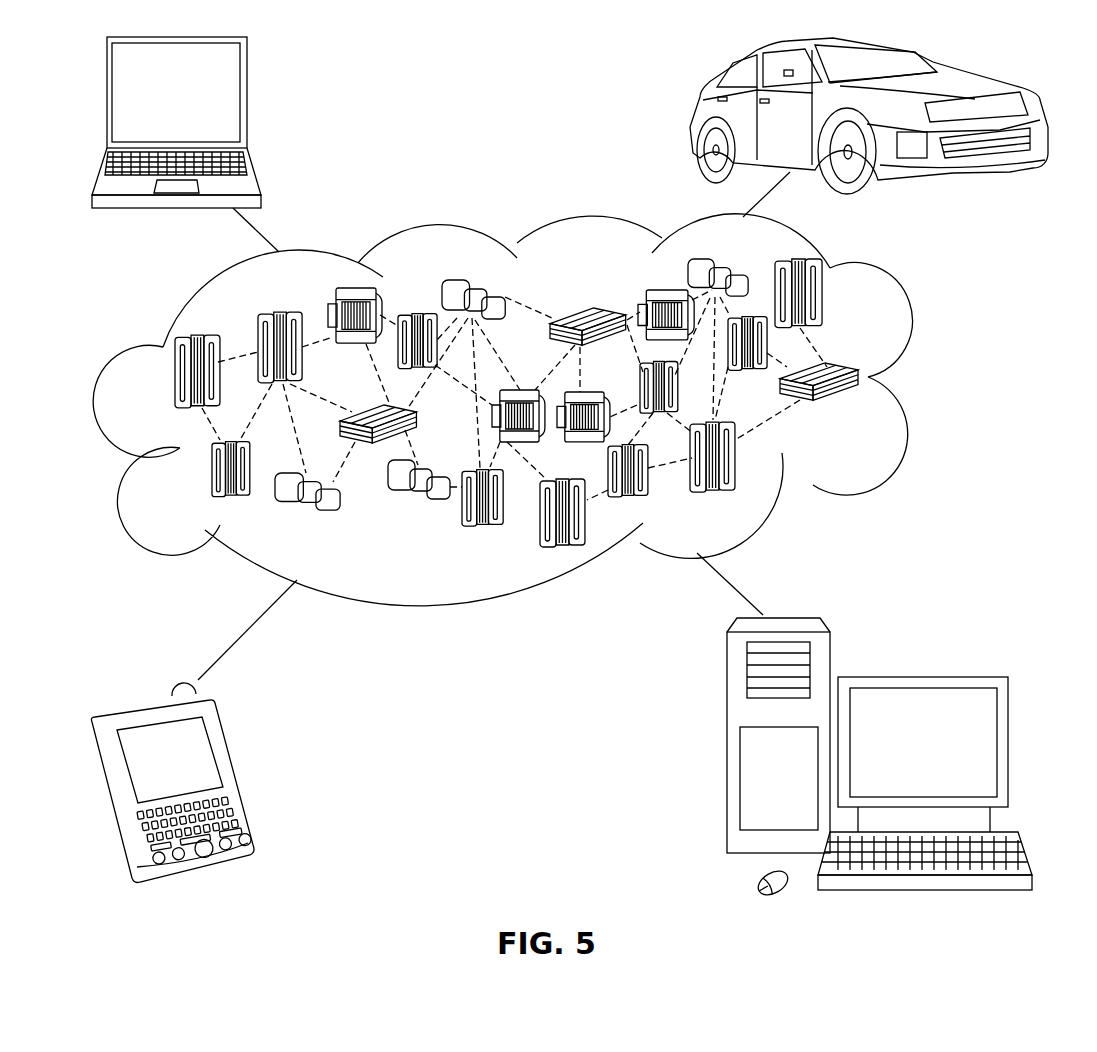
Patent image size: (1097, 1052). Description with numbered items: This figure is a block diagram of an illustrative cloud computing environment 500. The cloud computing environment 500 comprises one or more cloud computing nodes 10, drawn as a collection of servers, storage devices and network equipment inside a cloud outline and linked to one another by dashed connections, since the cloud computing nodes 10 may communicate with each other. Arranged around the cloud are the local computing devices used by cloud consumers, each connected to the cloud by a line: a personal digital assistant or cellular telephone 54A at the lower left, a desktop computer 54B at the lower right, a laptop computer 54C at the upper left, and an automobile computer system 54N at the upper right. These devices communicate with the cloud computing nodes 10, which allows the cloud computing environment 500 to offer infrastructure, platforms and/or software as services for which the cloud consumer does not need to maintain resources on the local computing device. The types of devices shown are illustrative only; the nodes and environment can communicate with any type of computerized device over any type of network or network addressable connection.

The personal digital assistant (PDA) or cellular telephone 54A is at (237, 773).
The desktop computer 54B is at (920, 676).
The laptop computer 54C is at (248, 100).
The automobile computer system 54N is at (690, 118).
The cloud computing environment 500 is at (547, 410).
The cloud computing node 10 is at (865, 414).